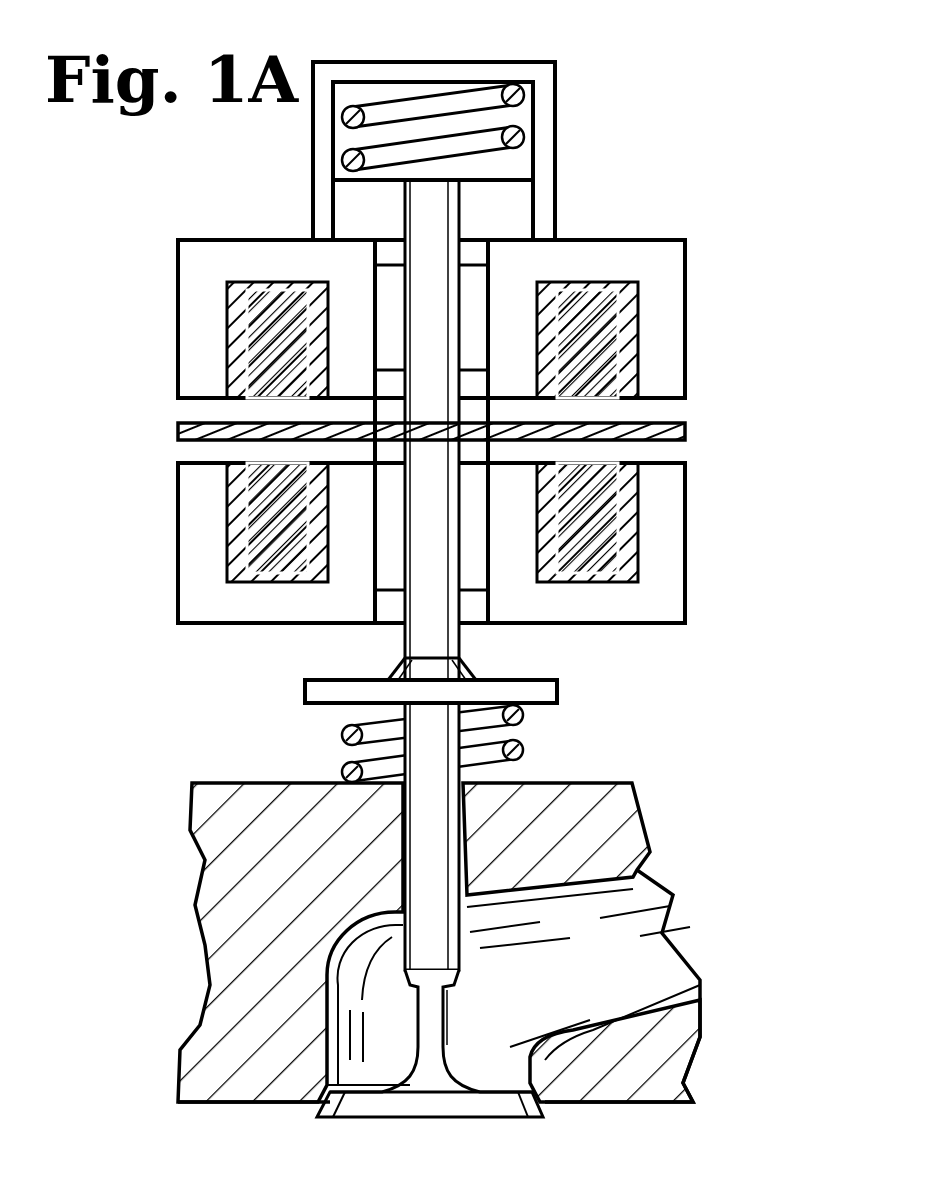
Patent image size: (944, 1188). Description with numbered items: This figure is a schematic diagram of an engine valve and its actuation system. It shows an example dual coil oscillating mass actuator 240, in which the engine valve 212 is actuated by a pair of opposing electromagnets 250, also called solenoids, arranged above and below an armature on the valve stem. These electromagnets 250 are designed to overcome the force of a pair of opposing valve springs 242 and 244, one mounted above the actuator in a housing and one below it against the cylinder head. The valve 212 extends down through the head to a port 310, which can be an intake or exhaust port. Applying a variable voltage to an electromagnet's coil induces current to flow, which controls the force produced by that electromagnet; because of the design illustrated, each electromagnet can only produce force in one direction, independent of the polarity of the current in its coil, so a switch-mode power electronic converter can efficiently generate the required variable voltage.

The valve 212 is at (432, 1021).
The dual coil oscillating mass actuator 240 is at (814, 468).
The valve spring 242 is at (473, 100).
The valve spring 244 is at (521, 751).
The electromagnet 250 is at (685, 270).
The port 310 is at (650, 957).